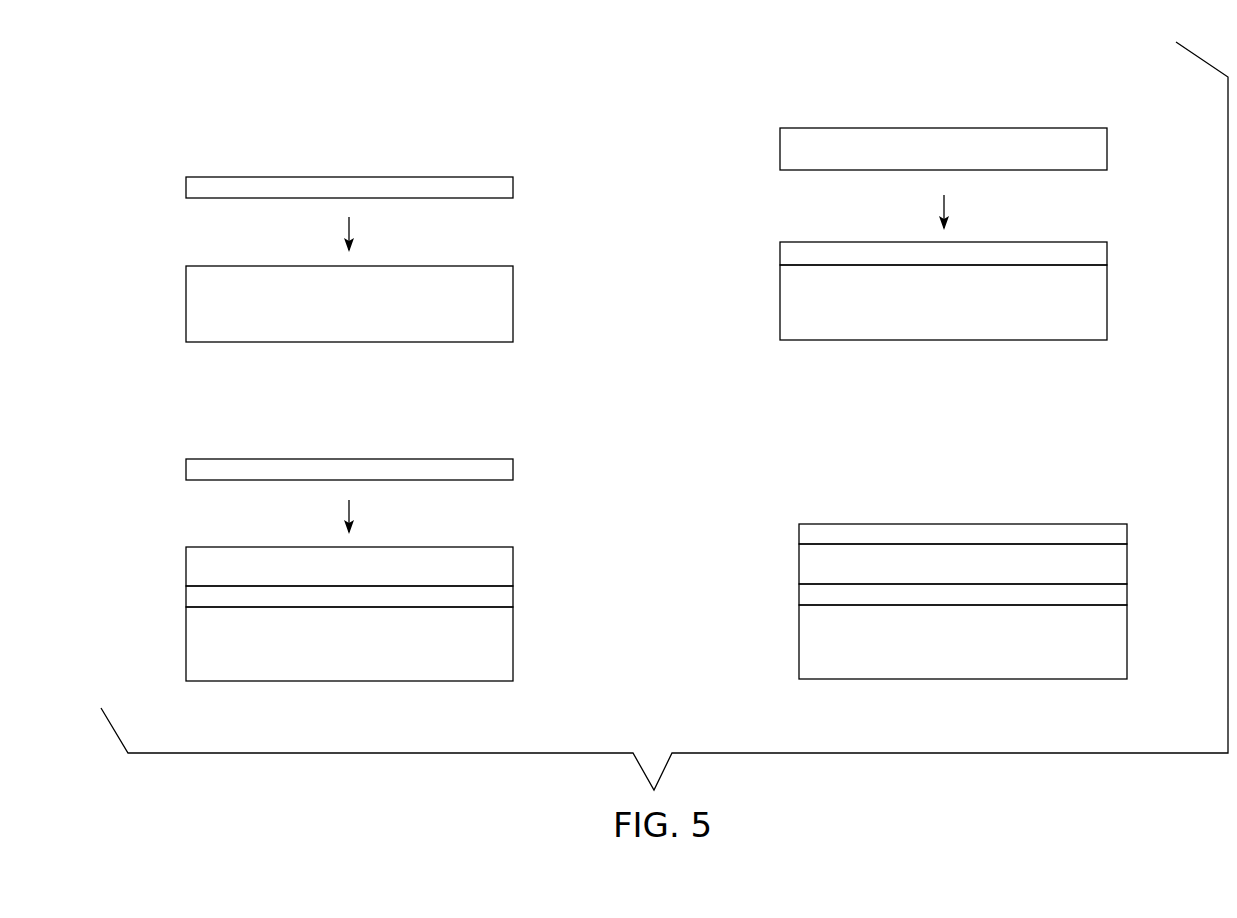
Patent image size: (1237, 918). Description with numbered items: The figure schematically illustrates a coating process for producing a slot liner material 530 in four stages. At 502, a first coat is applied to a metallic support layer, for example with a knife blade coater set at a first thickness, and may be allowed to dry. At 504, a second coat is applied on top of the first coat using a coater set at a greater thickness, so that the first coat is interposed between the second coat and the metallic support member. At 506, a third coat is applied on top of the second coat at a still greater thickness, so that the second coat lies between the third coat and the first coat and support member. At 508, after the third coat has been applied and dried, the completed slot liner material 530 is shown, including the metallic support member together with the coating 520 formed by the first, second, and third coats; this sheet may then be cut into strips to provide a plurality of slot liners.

The first coat application step 502 is at (379, 294).
The second coat application step 504 is at (964, 269).
The third coat application step 506 is at (370, 602).
The completed slot liner material depiction 508 is at (966, 606).
The coating 520 is at (922, 535).
The slot liner material 530 is at (966, 573).